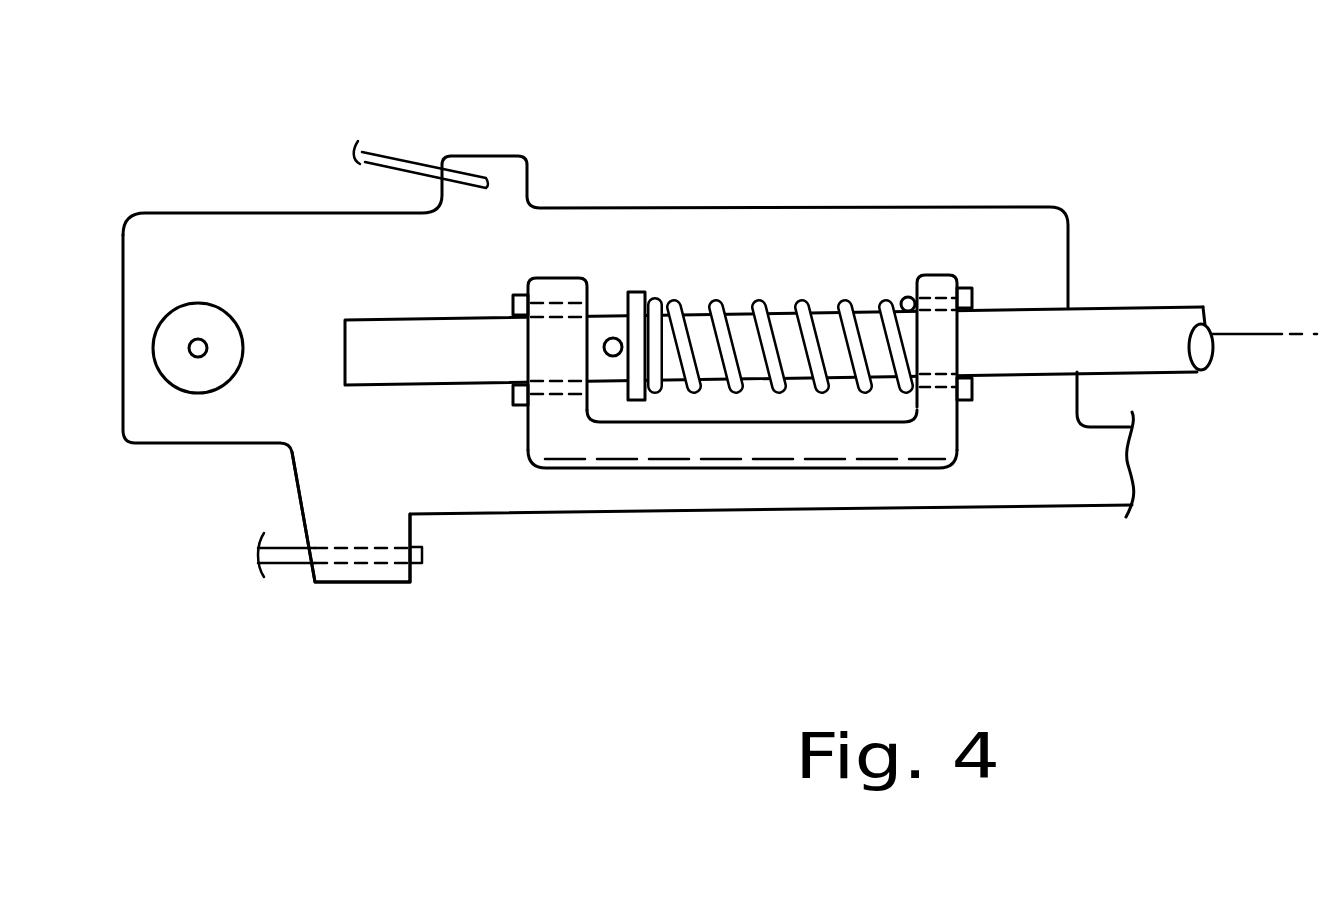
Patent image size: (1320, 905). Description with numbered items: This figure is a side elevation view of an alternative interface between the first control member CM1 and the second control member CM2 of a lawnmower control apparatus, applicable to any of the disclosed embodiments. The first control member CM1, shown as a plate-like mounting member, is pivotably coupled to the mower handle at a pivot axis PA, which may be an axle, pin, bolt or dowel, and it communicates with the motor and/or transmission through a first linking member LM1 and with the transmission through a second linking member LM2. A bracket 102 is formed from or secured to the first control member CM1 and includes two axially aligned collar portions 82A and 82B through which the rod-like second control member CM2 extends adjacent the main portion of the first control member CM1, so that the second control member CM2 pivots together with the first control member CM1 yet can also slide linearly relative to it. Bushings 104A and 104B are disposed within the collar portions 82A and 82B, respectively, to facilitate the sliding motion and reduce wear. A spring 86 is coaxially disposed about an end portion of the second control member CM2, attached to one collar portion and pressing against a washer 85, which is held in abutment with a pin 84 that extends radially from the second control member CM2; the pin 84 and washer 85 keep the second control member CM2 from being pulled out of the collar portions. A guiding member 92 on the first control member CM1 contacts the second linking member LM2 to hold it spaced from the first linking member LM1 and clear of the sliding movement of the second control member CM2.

The first control member CM1 is at (242, 215).
The second control member CM2 is at (1142, 307).
The pivot axis PA is at (185, 393).
The first linking member LM1 is at (400, 158).
The second linking member LM2 is at (285, 563).
The collar portion 82A is at (933, 275).
The collar portion 82B is at (563, 278).
The pin 84 is at (614, 357).
The washer 85 is at (638, 291).
The spring 86 is at (800, 300).
The guiding member 92 is at (375, 583).
The bracket 102 is at (835, 470).
The bushing 104A is at (973, 393).
The bushing 104B is at (513, 403).